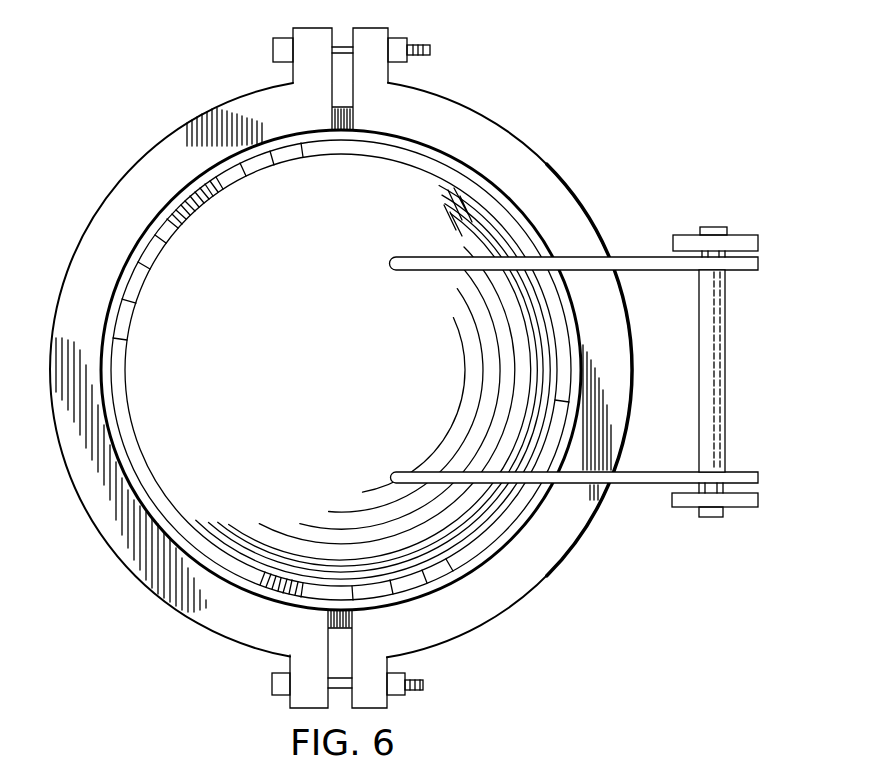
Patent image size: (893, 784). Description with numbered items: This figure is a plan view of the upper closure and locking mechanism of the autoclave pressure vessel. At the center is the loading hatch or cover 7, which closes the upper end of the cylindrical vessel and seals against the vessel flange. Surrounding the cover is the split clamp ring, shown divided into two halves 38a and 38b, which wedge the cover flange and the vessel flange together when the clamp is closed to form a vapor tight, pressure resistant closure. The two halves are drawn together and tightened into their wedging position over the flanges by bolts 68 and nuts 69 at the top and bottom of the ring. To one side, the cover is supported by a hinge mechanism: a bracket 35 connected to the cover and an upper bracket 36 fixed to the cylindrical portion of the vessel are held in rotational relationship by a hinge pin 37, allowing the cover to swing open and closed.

The loading hatch or cover 7 is at (450, 220).
The bracket 35 is at (646, 255).
The upper bracket 36 is at (747, 234).
The hinge pin 37 is at (727, 324).
The clamp half 38a is at (507, 128).
The clamp half 38b is at (183, 125).
The bolts 68 is at (428, 47).
The nuts 69 is at (399, 38).